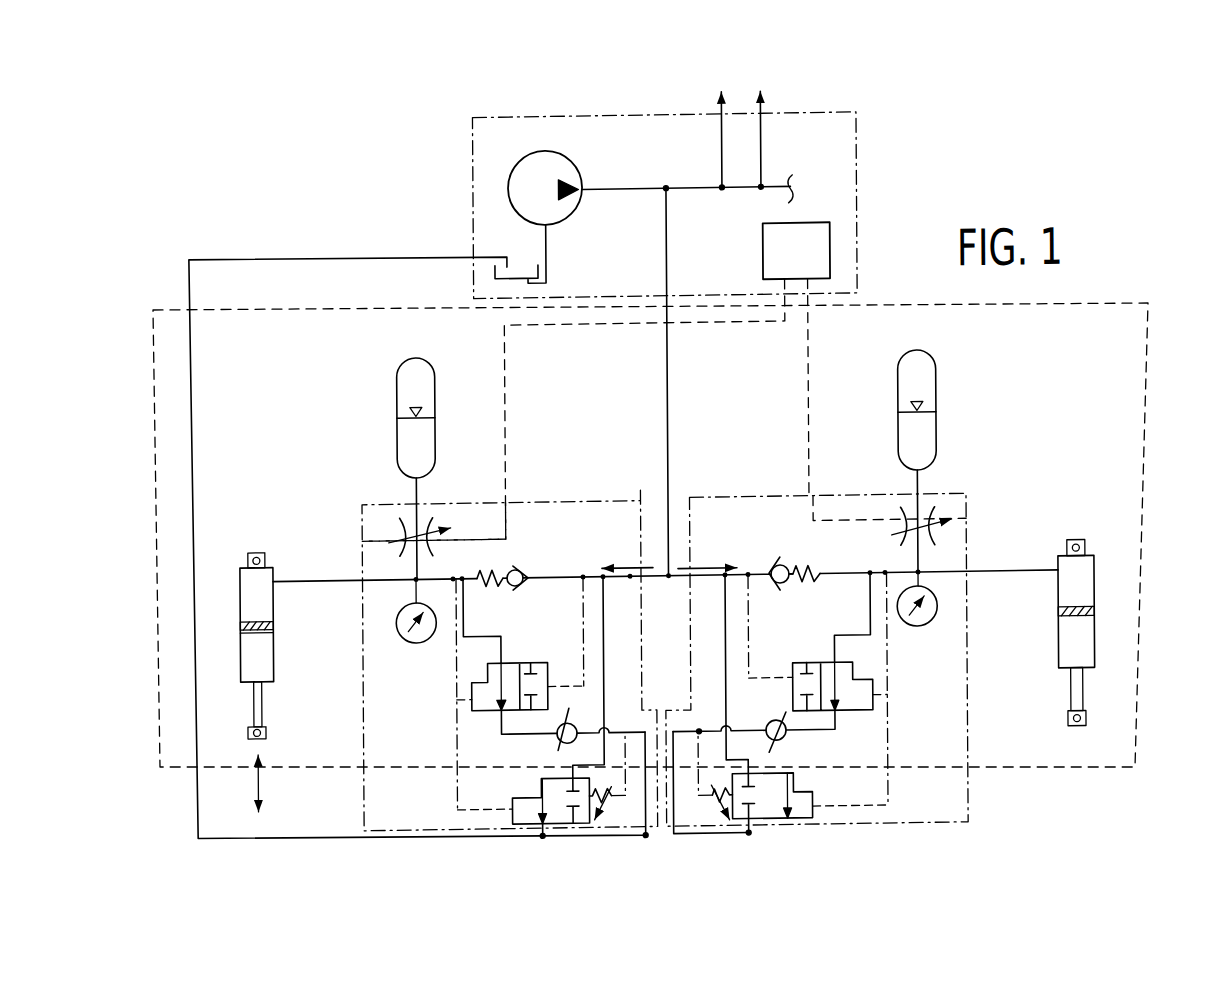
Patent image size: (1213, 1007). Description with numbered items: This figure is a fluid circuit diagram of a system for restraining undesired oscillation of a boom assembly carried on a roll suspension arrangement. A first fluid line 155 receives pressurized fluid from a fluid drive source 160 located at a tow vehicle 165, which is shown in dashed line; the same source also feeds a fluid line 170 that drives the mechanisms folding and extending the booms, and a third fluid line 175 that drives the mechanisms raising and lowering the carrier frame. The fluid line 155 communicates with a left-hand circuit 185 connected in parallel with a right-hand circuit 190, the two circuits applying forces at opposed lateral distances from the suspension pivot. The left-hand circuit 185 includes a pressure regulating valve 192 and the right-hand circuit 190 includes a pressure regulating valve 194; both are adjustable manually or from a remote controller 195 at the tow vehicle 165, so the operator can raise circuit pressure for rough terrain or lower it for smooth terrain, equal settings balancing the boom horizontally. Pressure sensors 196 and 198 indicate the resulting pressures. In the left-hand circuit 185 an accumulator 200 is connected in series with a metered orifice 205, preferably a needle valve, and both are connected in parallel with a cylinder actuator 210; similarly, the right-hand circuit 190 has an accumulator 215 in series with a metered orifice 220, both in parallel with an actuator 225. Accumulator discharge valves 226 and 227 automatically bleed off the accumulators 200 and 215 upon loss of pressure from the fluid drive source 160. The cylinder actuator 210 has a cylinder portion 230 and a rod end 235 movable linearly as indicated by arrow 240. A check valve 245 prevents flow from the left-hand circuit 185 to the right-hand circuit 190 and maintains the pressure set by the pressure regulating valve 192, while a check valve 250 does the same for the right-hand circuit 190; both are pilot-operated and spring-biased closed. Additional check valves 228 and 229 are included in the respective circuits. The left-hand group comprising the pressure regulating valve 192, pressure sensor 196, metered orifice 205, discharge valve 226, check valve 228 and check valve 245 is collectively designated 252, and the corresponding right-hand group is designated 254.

The first fluid line 155 is at (674, 250).
The fluid drive source 160 is at (559, 152).
The tow vehicle 165 is at (860, 187).
The fluid line 170 is at (724, 136).
The third fluid line 175 is at (770, 142).
The left-hand circuit 185 is at (627, 568).
The right-hand circuit 190 is at (698, 569).
The pressure regulating valve 192 is at (513, 783).
The pressure regulating valve 194 is at (812, 777).
The remote controller 195 is at (835, 254).
The pressure sensor 196 is at (415, 645).
The pressure sensor 198 is at (912, 644).
The accumulator 200 is at (387, 374).
The metered orifice 205 is at (448, 507).
The cylinder actuator 210 is at (1066, 410).
The accumulator 215 is at (946, 362).
The metered orifice 220 is at (946, 502).
The actuator 225 is at (1106, 582).
The accumulator discharge valve 226 is at (540, 744).
The accumulator discharge valve 227 is at (800, 745).
The check valve 228 is at (478, 720).
The check valve 229 is at (860, 722).
The cylinder portion 230 is at (242, 646).
The rod end 235 is at (266, 706).
The arrow 240 is at (268, 772).
The check valve 245 is at (526, 548).
The check valve 250 is at (806, 542).
The valve combination 252 is at (363, 519).
The valve combination 254 is at (810, 500).